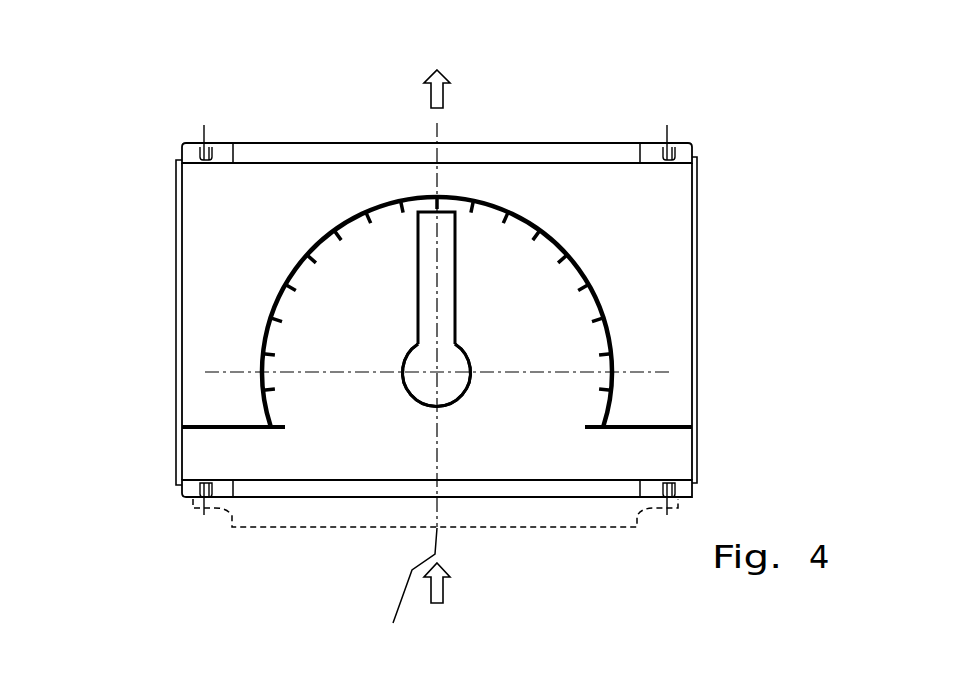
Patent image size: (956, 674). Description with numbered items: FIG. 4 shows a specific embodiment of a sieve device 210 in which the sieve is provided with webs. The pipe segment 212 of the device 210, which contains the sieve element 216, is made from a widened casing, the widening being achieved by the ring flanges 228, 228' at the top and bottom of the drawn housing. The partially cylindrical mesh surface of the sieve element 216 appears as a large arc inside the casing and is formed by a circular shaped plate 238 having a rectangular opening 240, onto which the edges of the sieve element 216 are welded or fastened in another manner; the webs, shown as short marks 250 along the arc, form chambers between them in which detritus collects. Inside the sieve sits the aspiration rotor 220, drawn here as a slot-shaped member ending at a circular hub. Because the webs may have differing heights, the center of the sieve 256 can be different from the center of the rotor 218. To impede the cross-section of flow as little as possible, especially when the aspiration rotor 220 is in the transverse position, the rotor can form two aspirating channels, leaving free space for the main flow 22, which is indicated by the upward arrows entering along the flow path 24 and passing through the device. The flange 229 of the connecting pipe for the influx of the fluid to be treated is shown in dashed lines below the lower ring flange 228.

The device 210 is at (843, 44).
The pipe segment 212 is at (700, 175).
The sieve element 216 is at (596, 290).
The center of the rotor 218 is at (437, 372).
The aspiration rotor 220 is at (420, 297).
The main flow 22 is at (443, 588).
The airflow path 24 is at (404, 591).
The ring flange 228 is at (437, 567).
The ring flange 228' is at (437, 91).
The flange of the connecting pipe 229 is at (613, 515).
The circular shaped plate 238 is at (207, 428).
The rectangular opening 240 is at (318, 447).
The graduation marks 250 is at (587, 267).
The center of the sieve 256 is at (437, 372).